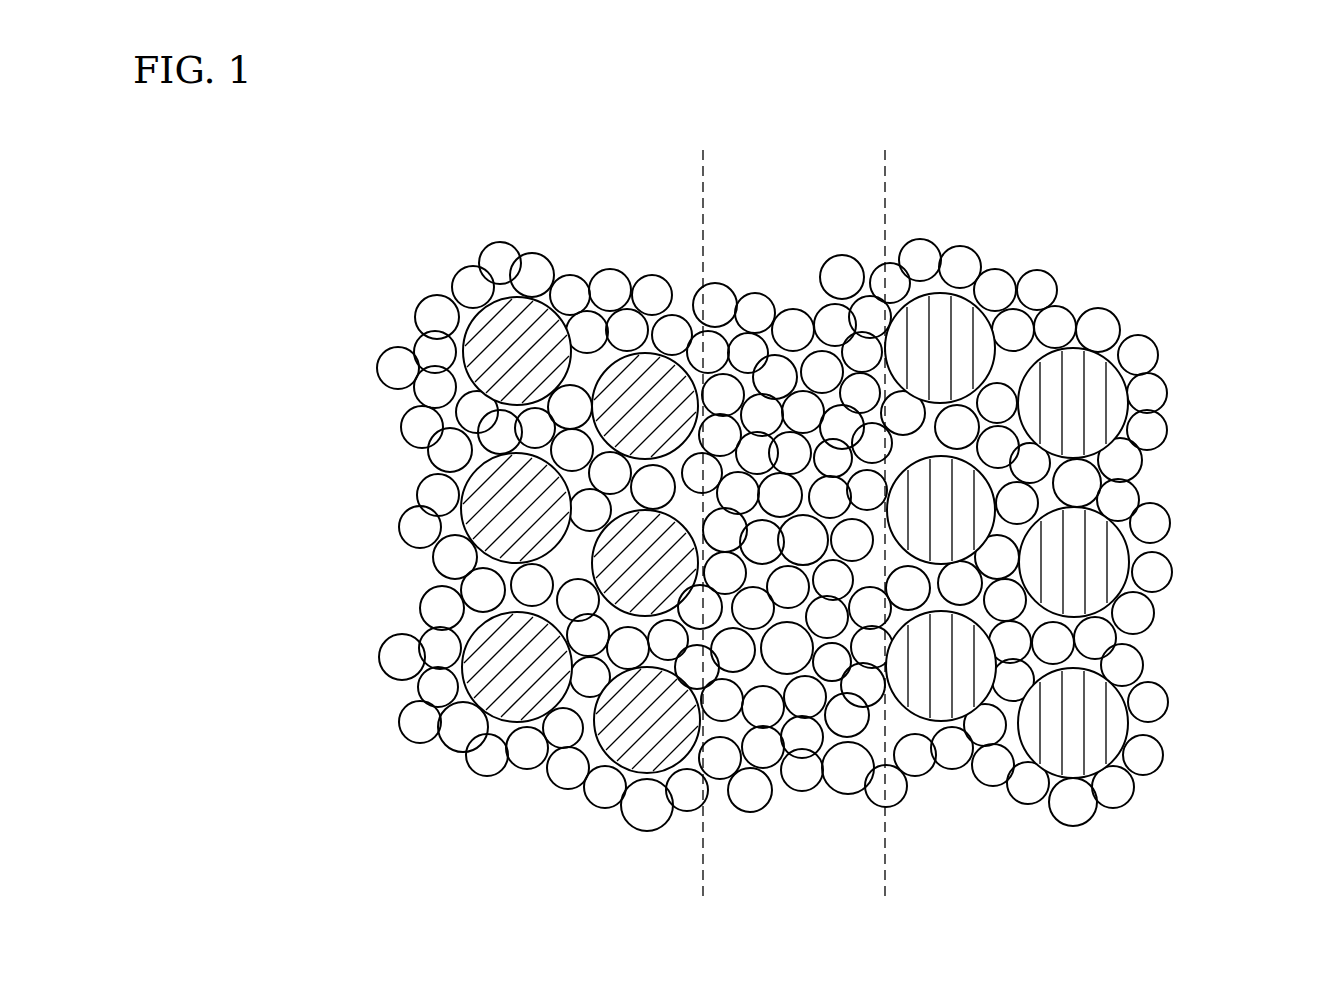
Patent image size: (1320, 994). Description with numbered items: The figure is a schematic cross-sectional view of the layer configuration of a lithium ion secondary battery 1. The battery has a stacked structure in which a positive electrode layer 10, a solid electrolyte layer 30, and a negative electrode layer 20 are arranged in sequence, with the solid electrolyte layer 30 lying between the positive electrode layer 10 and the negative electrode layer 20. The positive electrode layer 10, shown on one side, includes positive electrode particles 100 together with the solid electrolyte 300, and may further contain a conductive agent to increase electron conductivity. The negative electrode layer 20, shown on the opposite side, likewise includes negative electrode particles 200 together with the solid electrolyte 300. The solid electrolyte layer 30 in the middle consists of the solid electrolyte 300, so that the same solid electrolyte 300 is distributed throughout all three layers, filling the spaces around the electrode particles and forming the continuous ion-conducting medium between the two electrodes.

The lithium ion secondary battery 1 is at (417, 178).
The positive electrode layer 10 is at (692, 840).
The negative electrode layer 20 is at (1150, 838).
The solid electrolyte layer 30 is at (883, 157).
The positive electrode particle 100 is at (467, 683).
The negative electrode particle 200 is at (1092, 378).
The solid electrolyte 300 is at (853, 795).